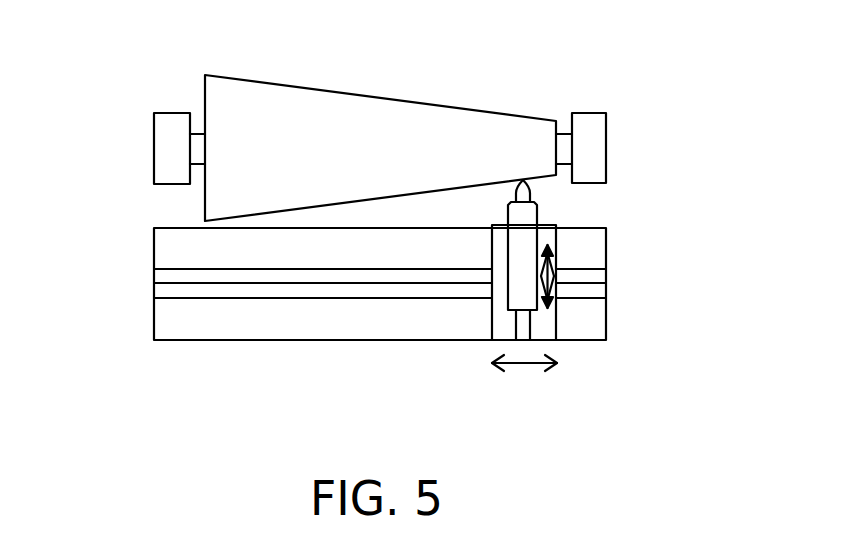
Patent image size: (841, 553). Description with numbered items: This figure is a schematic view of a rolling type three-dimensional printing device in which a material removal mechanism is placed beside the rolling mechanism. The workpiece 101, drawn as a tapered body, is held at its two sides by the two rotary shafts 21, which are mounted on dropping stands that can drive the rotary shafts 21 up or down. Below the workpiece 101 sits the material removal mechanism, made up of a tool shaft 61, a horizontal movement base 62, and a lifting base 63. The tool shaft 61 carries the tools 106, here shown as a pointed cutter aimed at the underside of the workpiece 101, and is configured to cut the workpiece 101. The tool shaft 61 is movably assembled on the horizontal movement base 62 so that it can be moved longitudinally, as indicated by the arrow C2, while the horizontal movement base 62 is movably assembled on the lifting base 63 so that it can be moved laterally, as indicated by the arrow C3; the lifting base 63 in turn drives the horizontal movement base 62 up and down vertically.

The workpiece 101 is at (482, 110).
The rotary shaft 21 is at (154, 147).
The tool 106 is at (533, 193).
The tool shaft 61 is at (538, 215).
The arrow C2 is at (556, 265).
The horizontal movement base 62 is at (556, 323).
The lifting base 63 is at (191, 340).
The horizontal moving direction C3 is at (525, 363).